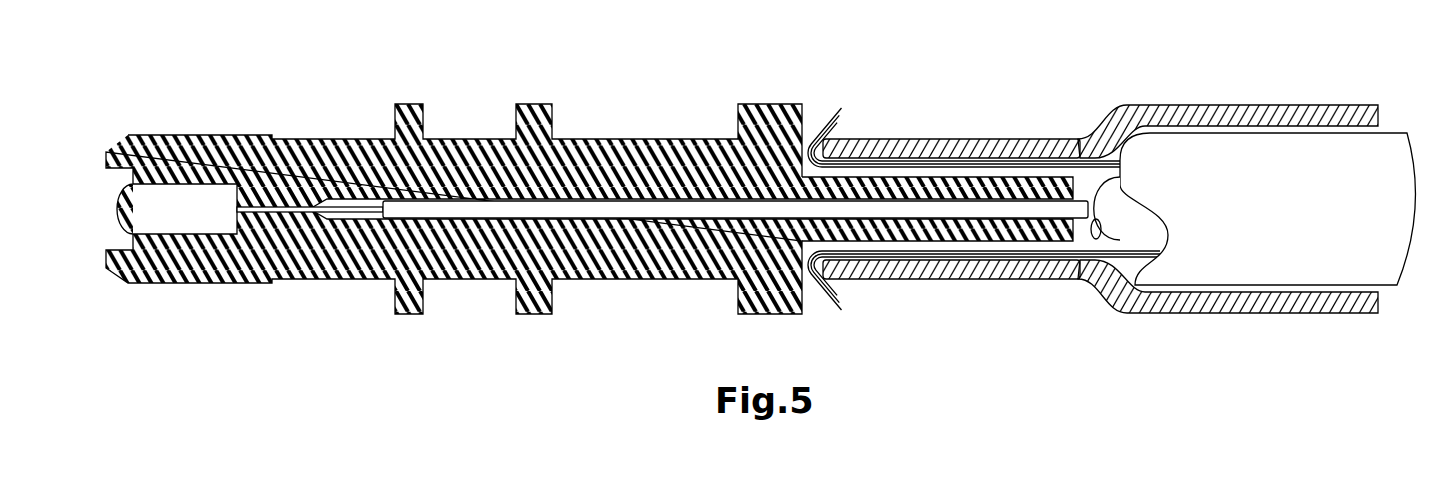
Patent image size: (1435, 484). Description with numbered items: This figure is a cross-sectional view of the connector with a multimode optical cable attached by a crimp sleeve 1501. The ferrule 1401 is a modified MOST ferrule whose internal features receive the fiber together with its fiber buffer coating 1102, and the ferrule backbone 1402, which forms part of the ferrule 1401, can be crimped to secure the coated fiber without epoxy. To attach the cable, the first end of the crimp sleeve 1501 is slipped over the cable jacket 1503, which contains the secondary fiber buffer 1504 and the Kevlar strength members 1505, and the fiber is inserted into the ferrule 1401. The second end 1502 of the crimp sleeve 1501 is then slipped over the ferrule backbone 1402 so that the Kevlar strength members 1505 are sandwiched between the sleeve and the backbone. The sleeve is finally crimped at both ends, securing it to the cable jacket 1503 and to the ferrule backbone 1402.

The fiber buffer coating 1102 is at (478, 200).
The ferrule 1401 is at (610, 157).
The ferrule backbone 1402 is at (937, 230).
The crimp sleeve 1501 is at (1137, 107).
The second end of crimp sleeve 1502 is at (915, 140).
The cable jacket 1503 is at (1260, 157).
The secondary fiber buffer 1504 is at (1115, 232).
The Kevlar strength members 1505 is at (1085, 168).